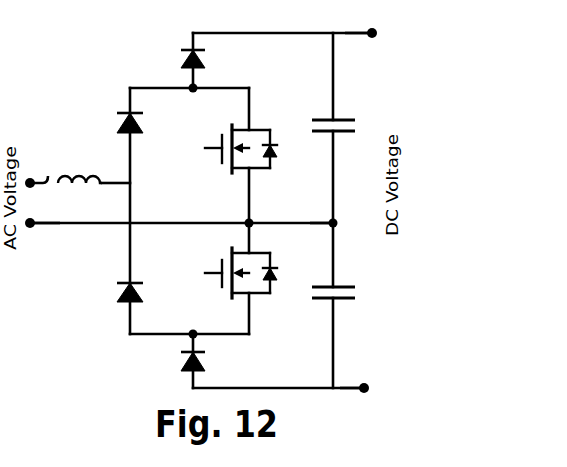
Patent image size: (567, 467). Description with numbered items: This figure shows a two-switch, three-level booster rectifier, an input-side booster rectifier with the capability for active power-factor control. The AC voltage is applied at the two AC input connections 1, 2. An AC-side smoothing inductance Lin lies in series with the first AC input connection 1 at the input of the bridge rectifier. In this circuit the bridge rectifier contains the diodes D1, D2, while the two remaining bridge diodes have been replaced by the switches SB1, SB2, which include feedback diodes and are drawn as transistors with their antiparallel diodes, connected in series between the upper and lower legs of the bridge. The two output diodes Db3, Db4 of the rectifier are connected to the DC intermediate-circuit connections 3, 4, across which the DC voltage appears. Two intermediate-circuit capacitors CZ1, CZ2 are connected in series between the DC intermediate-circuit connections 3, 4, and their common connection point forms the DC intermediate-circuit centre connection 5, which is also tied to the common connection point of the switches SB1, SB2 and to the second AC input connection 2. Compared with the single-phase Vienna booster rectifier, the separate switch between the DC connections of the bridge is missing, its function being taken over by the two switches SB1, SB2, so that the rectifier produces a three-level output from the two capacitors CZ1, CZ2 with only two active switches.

The AC input connection 1 is at (36, 172).
The AC input connection 2 is at (42, 242).
The DC intermediate-circuit connection 3 is at (364, 22).
The DC intermediate-circuit connection 4 is at (354, 375).
The DC intermediate-circuit centre connection 5 is at (337, 212).
The smoothing inductance Lin is at (80, 158).
The diode in the rectifier D1 is at (118, 107).
The diode in the rectifier D2 is at (119, 312).
The output diode of the rectifier Db3 is at (170, 50).
The output diode of the rectifier Db4 is at (173, 355).
The switch in the rectifier SB1 is at (231, 176).
The switch in the rectifier SB2 is at (226, 271).
The intermediate-circuit capacitor CZ1 is at (347, 106).
The intermediate-circuit capacitor CZ2 is at (347, 276).